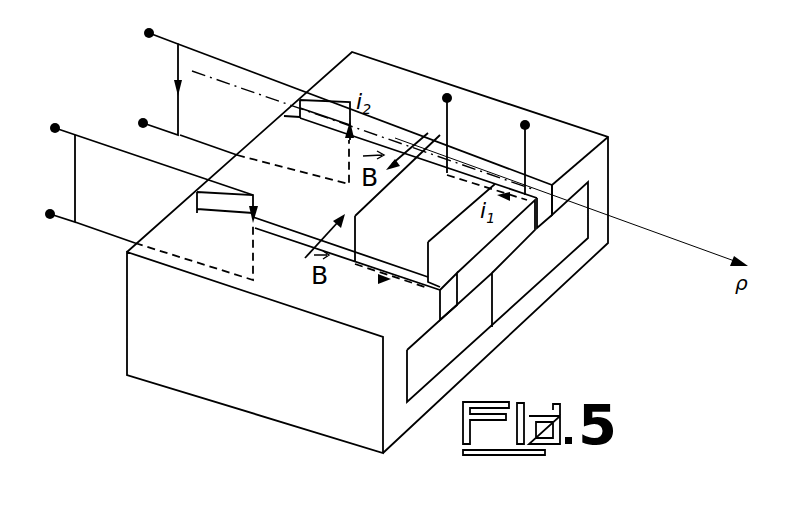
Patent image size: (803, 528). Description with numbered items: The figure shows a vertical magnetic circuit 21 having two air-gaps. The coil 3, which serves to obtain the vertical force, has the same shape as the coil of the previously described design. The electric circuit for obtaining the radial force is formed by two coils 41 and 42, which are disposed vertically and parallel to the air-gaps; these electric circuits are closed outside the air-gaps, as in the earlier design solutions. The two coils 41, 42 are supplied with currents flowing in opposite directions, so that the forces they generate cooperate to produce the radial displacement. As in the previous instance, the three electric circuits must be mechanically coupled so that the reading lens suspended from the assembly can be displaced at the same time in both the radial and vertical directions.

The vertical magnetic circuit 21 is at (245, 403).
The coil 42 is at (196, 43).
The coil 41 is at (93, 230).
The coil 3 is at (457, 225).